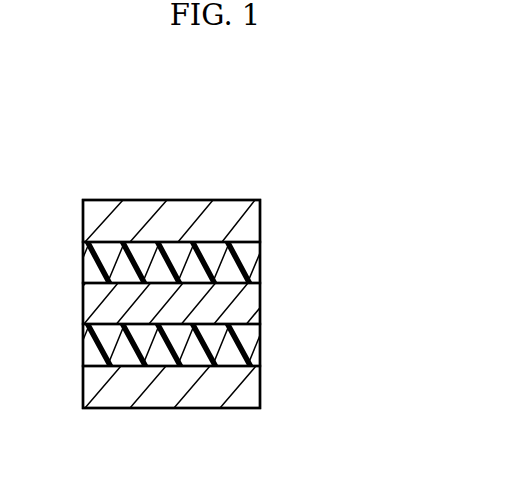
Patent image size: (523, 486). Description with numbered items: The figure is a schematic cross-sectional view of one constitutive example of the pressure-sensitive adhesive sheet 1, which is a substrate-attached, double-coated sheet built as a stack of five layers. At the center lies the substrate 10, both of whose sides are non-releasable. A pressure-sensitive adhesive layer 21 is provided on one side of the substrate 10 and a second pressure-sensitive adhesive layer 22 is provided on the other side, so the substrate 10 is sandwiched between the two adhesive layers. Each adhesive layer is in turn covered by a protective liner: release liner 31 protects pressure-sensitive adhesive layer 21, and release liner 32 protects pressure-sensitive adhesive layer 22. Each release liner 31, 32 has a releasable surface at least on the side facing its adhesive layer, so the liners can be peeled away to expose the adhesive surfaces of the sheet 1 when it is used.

The pressure-sensitive adhesive sheet 1 is at (231, 144).
The substrate 10 is at (262, 309).
The pressure-sensitive adhesive layer 21 is at (262, 351).
The pressure-sensitive adhesive layer 22 is at (262, 267).
The release liner 31 is at (262, 395).
The release liner 32 is at (262, 222).